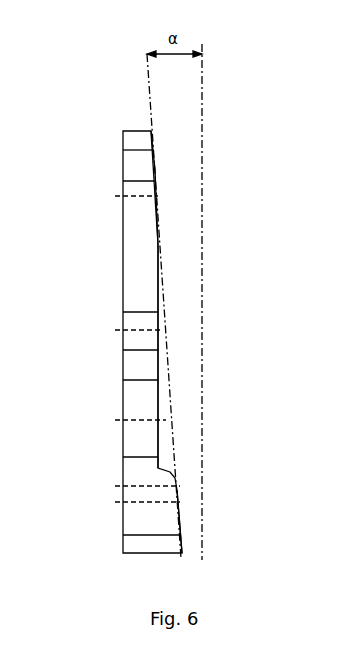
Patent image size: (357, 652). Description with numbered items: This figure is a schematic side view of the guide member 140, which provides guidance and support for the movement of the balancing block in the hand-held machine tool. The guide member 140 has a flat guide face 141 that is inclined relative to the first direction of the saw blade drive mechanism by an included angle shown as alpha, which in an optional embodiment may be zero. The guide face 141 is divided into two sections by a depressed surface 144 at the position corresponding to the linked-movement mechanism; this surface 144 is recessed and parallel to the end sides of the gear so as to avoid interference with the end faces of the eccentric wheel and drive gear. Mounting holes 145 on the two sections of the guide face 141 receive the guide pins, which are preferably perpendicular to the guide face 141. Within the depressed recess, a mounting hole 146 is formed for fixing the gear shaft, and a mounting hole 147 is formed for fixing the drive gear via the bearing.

The guide member 140 is at (134, 275).
The guide face 141 is at (155, 172).
The depressed surface 144 is at (157, 357).
The mounting holes 145 is at (129, 192).
The mounting hole 146 is at (150, 330).
The mounting hole 147 is at (143, 403).